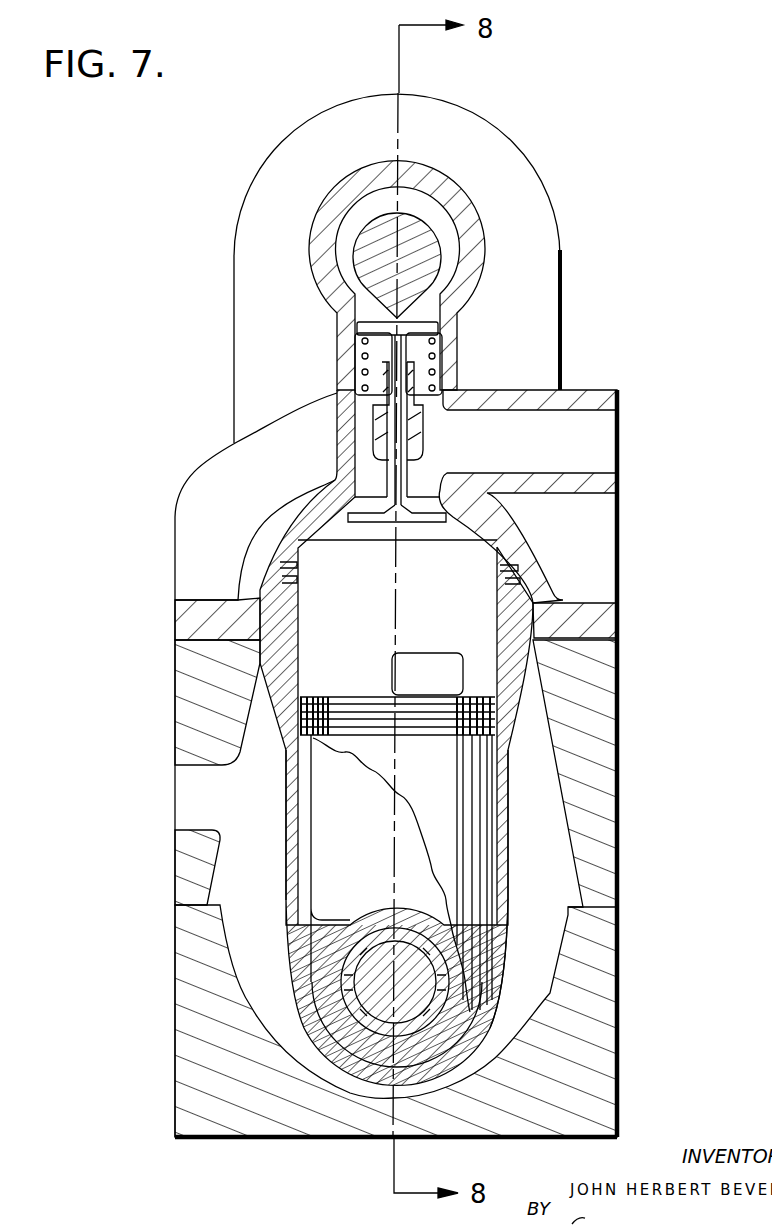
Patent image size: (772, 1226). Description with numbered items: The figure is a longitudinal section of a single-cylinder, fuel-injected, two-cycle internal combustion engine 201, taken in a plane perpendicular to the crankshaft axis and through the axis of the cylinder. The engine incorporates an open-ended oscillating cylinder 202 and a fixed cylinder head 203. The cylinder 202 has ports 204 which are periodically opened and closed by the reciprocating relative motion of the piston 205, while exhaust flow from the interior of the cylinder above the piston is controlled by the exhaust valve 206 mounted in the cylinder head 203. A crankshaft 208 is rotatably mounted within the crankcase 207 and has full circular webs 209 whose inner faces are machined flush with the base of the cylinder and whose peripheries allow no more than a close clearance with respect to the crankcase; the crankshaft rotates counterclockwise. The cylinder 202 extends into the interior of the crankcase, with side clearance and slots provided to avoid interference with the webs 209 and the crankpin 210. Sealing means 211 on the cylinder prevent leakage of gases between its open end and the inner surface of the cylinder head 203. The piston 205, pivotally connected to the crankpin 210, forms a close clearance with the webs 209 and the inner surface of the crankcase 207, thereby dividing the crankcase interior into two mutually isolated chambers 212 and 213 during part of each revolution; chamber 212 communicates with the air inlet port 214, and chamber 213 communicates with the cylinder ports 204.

The engine 201 is at (652, 498).
The oscillating cylinder 202 is at (550, 598).
The cylinder head 203 is at (494, 776).
The ports 204 is at (455, 683).
The piston 205 is at (440, 792).
The exhaust valve 206 is at (527, 473).
The crankcase 207 is at (617, 932).
The crankshaft 208 is at (403, 952).
The webs 209 is at (287, 947).
The crankpin 210 is at (475, 1040).
The sealing means 211 is at (545, 560).
The chamber 212 is at (253, 945).
The chamber 213 is at (537, 955).
The air inlet port 214 is at (225, 803).